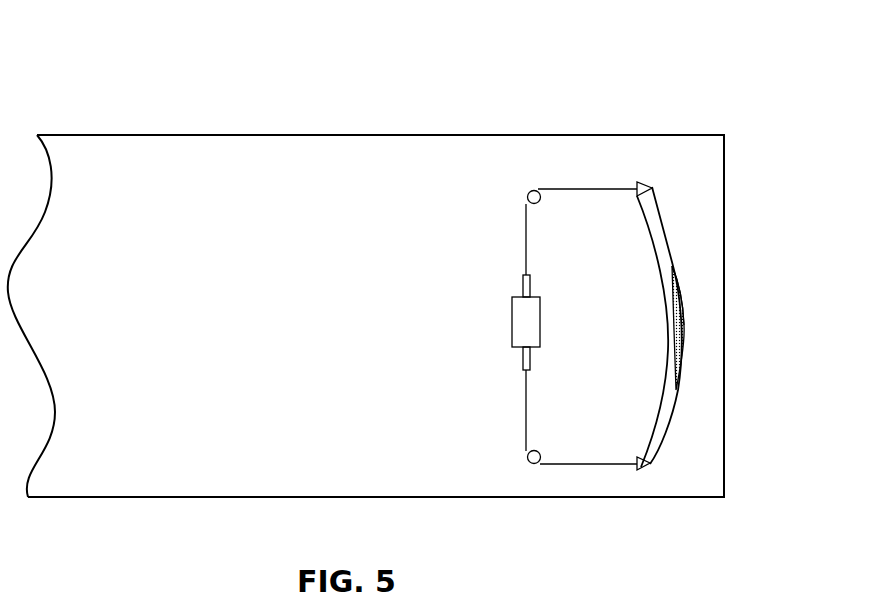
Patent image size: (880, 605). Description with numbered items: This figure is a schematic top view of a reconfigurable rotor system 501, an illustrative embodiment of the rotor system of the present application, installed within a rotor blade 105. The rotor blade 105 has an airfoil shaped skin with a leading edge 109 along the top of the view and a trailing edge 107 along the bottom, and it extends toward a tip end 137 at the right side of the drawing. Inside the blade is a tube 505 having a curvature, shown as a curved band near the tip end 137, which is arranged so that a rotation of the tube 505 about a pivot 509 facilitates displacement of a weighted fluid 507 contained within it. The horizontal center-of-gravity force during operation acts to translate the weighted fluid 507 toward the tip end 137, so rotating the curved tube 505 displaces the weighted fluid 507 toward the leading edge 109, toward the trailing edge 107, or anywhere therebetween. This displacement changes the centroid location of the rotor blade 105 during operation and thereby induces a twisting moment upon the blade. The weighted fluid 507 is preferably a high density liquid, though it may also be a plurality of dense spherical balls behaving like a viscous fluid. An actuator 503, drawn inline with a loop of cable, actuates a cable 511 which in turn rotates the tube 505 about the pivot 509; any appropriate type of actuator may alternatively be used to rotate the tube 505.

The reconfigurable rotor system 501 is at (314, 81).
The rotor blade 105 is at (165, 135).
The trailing edge 107 is at (627, 500).
The leading edge 109 is at (467, 135).
The tip end 137 is at (727, 162).
The actuator 503 is at (512, 320).
The tube 505 is at (657, 417).
The weighted fluid 507 is at (678, 362).
The pivot 509 is at (684, 324).
The cable 511 is at (527, 203).